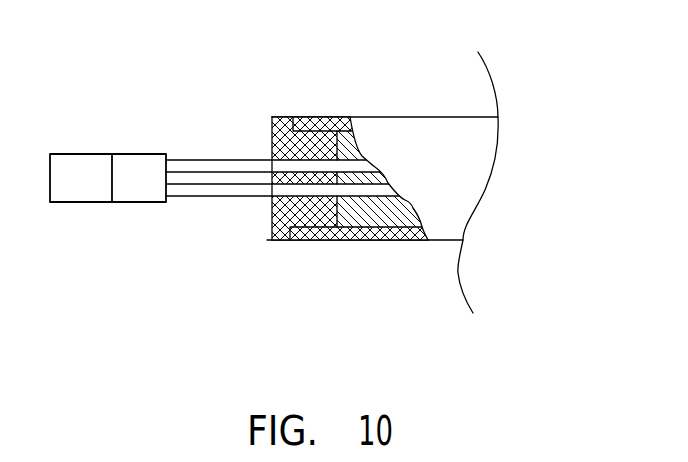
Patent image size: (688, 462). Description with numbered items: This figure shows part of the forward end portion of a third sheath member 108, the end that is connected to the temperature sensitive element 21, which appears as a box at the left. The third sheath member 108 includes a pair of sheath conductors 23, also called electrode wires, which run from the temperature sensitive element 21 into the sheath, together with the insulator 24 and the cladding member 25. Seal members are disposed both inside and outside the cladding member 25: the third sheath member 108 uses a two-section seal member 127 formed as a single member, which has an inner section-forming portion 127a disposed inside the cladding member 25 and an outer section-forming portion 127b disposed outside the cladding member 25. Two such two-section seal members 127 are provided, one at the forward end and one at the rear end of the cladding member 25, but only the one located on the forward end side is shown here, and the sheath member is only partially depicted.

The temperature sensitive element 21 is at (83, 192).
The sheath conductors 23 is at (187, 167).
The insulator 24 is at (385, 213).
The cladding member 25 is at (338, 131).
The two-section seal member 127 is at (240, 290).
The inner section-forming portion 127a is at (318, 217).
The outer section-forming portion 127b is at (278, 217).
The third sheath member 108 is at (197, 332).